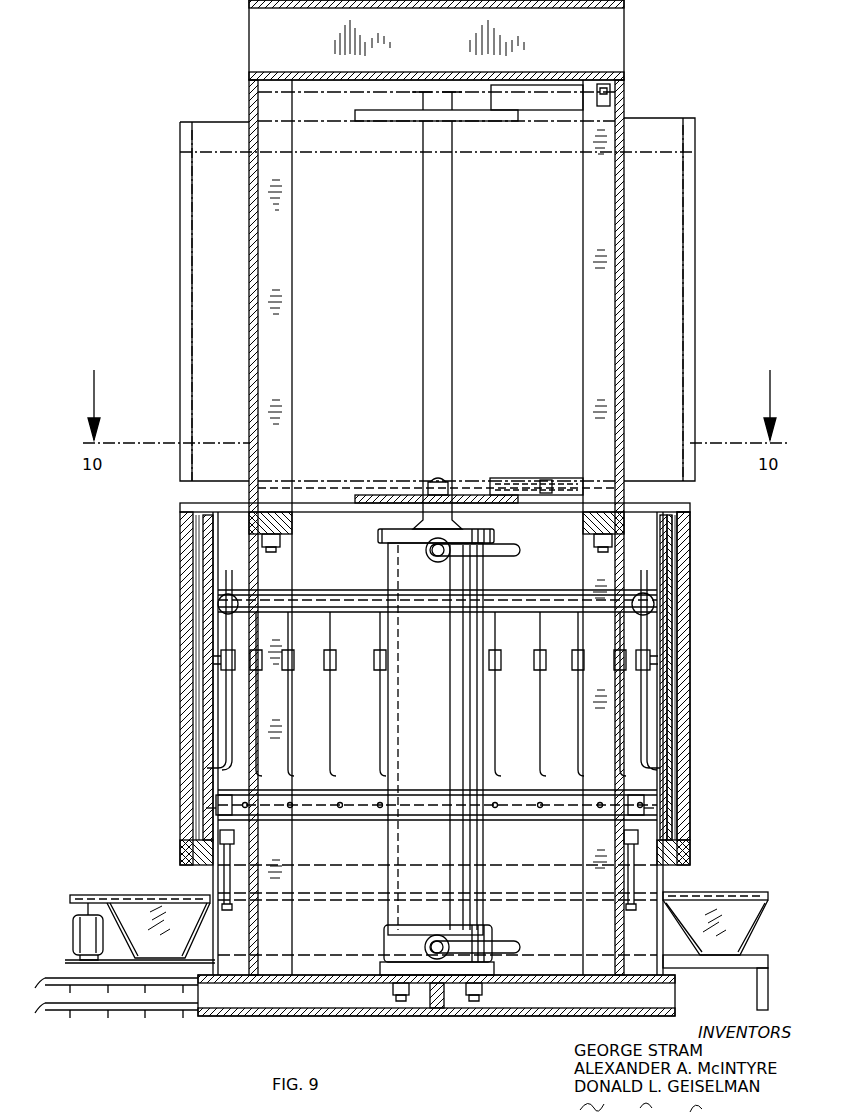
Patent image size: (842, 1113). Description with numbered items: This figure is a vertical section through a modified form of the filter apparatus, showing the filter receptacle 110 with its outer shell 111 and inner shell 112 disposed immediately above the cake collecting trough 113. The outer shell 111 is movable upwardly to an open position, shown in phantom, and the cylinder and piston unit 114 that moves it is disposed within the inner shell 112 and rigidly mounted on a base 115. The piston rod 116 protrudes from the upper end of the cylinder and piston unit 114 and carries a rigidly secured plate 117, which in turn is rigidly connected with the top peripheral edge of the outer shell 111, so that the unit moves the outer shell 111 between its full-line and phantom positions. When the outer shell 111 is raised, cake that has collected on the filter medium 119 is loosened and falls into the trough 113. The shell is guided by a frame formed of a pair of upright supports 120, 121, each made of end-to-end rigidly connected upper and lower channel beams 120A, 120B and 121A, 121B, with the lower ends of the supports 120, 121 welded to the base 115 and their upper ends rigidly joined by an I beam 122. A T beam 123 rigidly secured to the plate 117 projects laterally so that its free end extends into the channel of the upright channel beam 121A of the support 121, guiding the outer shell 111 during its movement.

The filter receptacle 110 is at (694, 537).
The outer shell 111 is at (690, 683).
The inner shell 112 is at (665, 878).
The cake collecting trough 113 is at (755, 926).
The cylinder and piston unit 114 is at (460, 858).
The base 115 is at (490, 1017).
The piston rod 116 is at (463, 498).
The plate 117 is at (368, 493).
The filter medium 119 is at (665, 637).
The upright support 120 is at (245, 104).
The upper channel beam 120A is at (292, 256).
The lower channel beam 120B is at (292, 568).
The upright support 121 is at (626, 100).
The upper channel beam 121A is at (583, 235).
The lower channel beam 121B is at (583, 568).
The I beam 122 is at (624, 45).
The T beam 123 is at (527, 480).